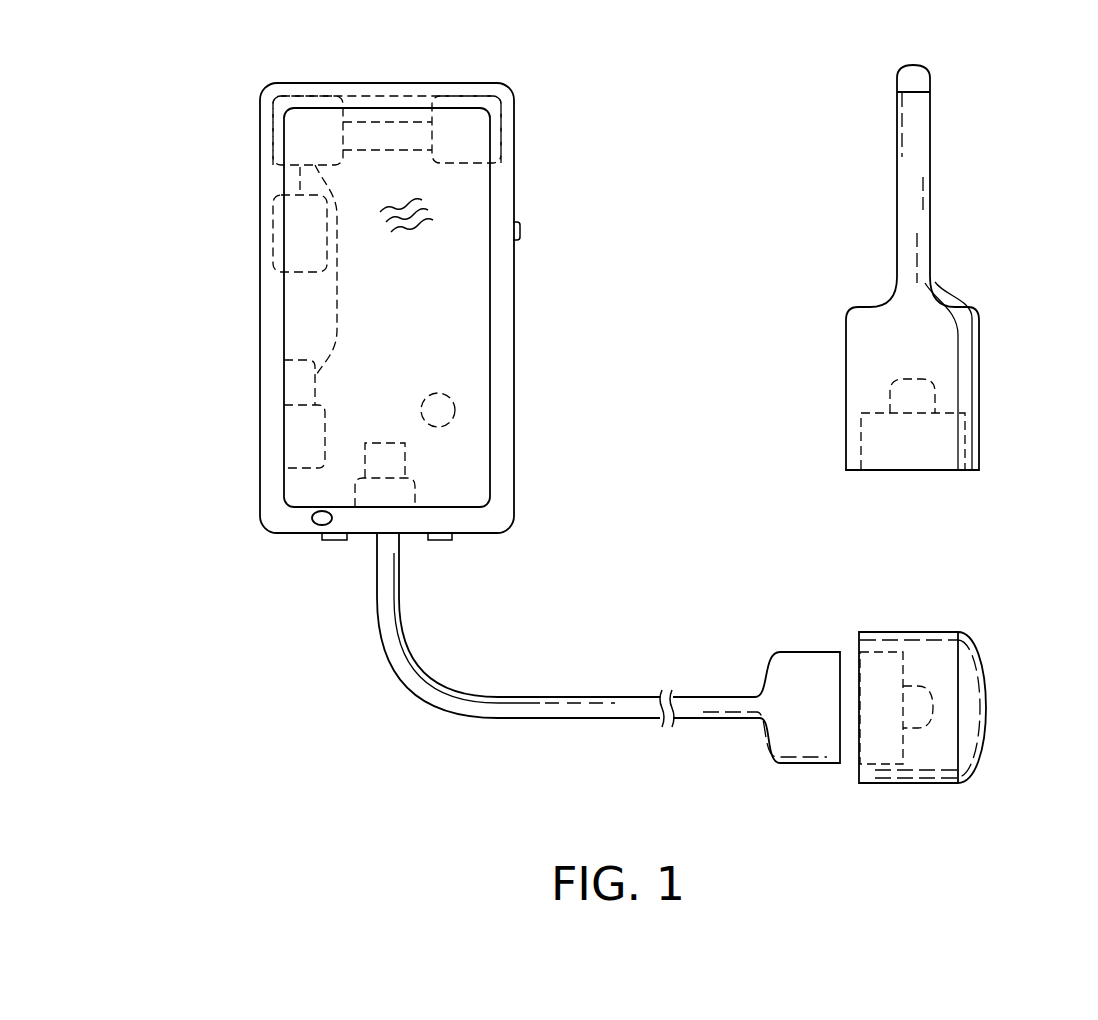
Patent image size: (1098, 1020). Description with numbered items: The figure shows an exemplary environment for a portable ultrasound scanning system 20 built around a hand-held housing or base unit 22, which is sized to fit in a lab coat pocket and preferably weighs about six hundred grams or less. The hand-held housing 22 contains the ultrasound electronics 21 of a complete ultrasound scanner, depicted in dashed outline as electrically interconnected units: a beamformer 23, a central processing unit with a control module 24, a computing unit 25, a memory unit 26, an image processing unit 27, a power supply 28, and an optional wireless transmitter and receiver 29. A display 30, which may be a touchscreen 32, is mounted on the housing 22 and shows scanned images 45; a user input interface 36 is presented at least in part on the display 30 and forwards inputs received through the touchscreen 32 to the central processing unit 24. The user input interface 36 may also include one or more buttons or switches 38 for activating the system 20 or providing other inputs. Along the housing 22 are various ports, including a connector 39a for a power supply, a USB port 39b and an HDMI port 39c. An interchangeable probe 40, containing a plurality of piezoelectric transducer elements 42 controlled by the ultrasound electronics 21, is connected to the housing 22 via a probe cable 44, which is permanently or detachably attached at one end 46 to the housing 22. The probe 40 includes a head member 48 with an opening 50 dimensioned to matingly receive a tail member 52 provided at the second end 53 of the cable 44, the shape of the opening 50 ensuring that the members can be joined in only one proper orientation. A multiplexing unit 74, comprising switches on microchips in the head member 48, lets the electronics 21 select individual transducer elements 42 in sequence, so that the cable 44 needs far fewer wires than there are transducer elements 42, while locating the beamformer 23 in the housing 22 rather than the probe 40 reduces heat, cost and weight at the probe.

The portable ultrasound scanning system 20 is at (248, 561).
The ultrasound electronics 21 is at (292, 562).
The hand-held housing 22 is at (513, 118).
The beamformer 23 is at (373, 96).
The central processing unit with a control module 24 is at (273, 150).
The computing unit 25 is at (402, 150).
The memory unit 26 is at (501, 140).
The image processing unit 27 is at (405, 458).
The power supply 28 is at (273, 252).
The wireless transmitter and receiver 29 is at (283, 383).
The display 30 is at (460, 340).
The touchscreen 32 is at (462, 270).
The user input interface 36 is at (456, 405).
The buttons or switches 38 is at (312, 520).
The connector for a power supply 39a is at (336, 541).
The USB port 39b is at (452, 541).
The HDMI port 39c is at (520, 228).
The interchangeable probe 40 is at (940, 806).
The piezoelectric transducer elements 42 is at (972, 658).
The probe cable 44 is at (527, 719).
The scanned images 45 is at (433, 220).
The end of probe cable 46 is at (400, 553).
The head member 48 is at (893, 635).
The opening 50 is at (858, 662).
The tail member 52 is at (810, 765).
The second end of the cable 53 is at (755, 697).
The multiplexing unit 74 is at (917, 688).